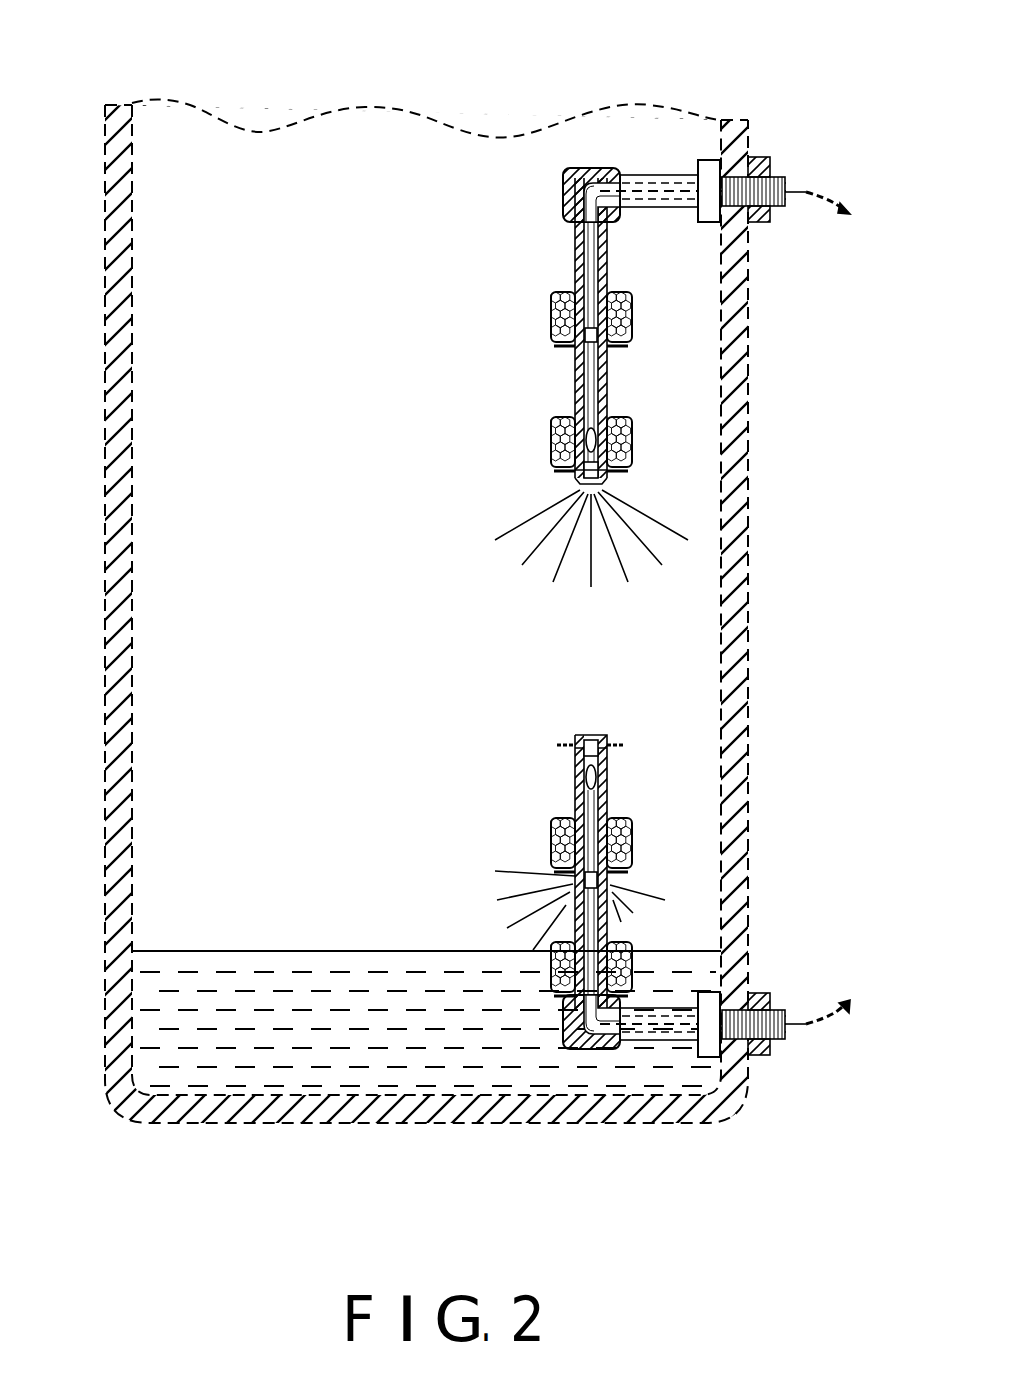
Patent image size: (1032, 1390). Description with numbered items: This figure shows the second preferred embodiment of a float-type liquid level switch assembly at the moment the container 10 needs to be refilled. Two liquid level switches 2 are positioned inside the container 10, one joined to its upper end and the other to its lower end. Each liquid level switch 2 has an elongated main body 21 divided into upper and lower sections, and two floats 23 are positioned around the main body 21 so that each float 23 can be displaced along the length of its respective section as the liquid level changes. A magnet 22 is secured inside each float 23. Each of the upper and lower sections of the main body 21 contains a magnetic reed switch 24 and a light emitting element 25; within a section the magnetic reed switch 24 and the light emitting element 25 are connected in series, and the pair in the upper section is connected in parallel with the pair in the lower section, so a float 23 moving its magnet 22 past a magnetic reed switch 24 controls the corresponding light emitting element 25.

The liquid level switch 2 is at (562, 232).
The container 10 is at (748, 495).
The main body 21 is at (612, 796).
The magnet 22 is at (633, 983).
The float 23 is at (622, 943).
The magnetic reed switch 24 is at (612, 777).
The light emitting element 25 is at (612, 881).